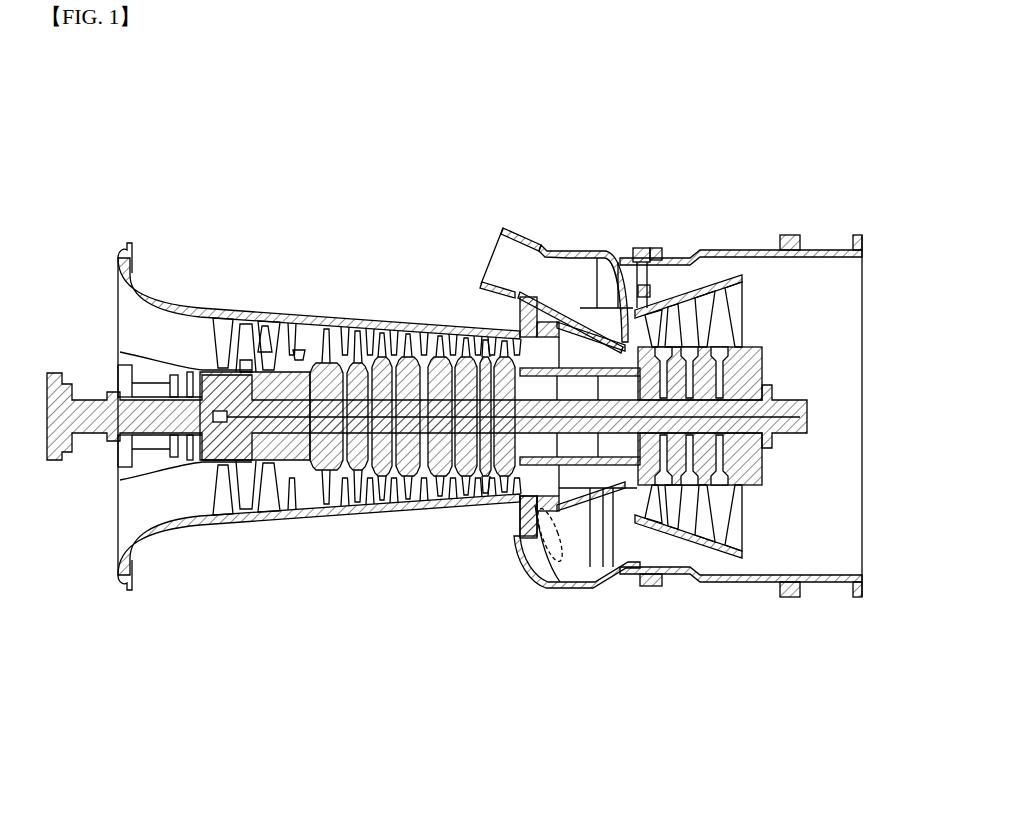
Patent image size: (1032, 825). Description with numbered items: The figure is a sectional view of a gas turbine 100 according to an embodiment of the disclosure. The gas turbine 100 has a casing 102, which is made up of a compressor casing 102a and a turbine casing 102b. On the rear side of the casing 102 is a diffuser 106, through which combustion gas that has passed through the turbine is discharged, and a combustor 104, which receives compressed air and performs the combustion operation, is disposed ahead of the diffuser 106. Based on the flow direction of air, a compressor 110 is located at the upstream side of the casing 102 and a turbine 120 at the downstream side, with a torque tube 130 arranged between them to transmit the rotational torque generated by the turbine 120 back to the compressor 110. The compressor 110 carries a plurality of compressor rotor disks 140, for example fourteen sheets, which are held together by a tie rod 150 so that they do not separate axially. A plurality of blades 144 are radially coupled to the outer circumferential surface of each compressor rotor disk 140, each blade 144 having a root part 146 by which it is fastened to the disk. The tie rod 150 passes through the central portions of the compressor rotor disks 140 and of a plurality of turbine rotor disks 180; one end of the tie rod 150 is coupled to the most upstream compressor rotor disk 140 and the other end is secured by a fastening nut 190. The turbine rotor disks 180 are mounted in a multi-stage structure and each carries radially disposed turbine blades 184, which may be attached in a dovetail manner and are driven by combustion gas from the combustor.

The gas turbine 100 is at (713, 73).
The casing 102 is at (464, 124).
The compressor casing 102a is at (343, 303).
The turbine casing 102b is at (595, 240).
The combustor 104 is at (499, 225).
The diffuser 106 is at (829, 229).
The compressor 110 is at (358, 527).
The turbine 120 is at (690, 582).
The torque tube 130 is at (533, 365).
The compressor rotor disk 140 is at (247, 370).
The blade 144 is at (265, 352).
The root part 146 is at (298, 350).
The tie rod 150 is at (137, 450).
The turbine rotor disk 180 is at (748, 347).
The turbine blade 184 is at (703, 325).
The fastening nut 190 is at (772, 388).